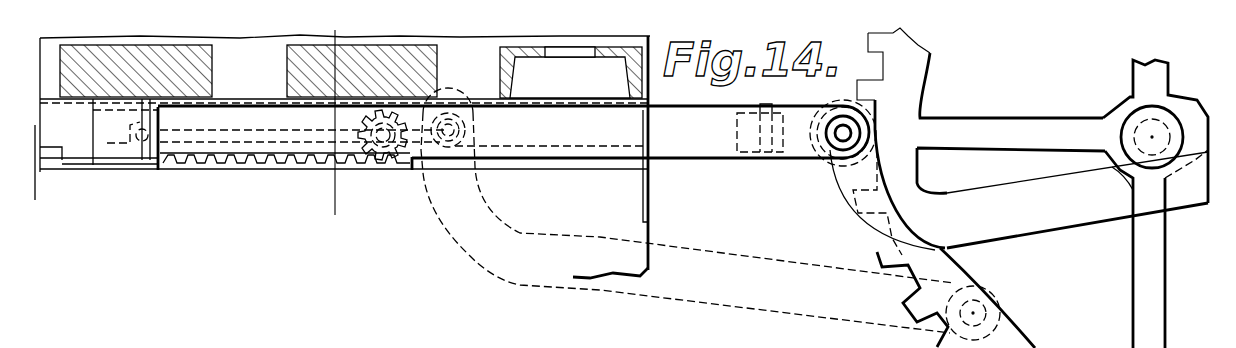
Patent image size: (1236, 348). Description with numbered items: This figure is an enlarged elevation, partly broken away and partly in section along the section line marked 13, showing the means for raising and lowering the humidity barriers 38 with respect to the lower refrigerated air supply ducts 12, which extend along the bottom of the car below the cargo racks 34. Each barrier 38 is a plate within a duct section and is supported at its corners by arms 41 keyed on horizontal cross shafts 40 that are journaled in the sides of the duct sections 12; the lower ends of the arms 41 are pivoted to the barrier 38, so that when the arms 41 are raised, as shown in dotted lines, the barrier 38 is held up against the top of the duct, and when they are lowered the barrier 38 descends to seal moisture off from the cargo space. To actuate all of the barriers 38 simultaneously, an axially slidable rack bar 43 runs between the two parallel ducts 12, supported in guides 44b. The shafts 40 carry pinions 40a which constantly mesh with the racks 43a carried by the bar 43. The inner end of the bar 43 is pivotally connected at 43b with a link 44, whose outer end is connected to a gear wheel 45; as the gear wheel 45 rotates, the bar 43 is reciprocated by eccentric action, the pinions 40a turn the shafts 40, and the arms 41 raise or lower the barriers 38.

The refrigerated air supply duct 12 is at (597, 98).
The section line 13- 13 is at (335, 31).
The cargo rack 34 is at (93, 78).
The humidity barrier 38 is at (233, 150).
The cross shaft 40 is at (420, 110).
The pinion 40a is at (407, 165).
The arm 41 is at (205, 136).
The rack bar 43 is at (698, 142).
The rack 43a is at (345, 204).
The pivotal connection 43b is at (552, 148).
The link 44 is at (553, 258).
The guide 44b is at (48, 162).
The gear wheel 45 is at (897, 253).